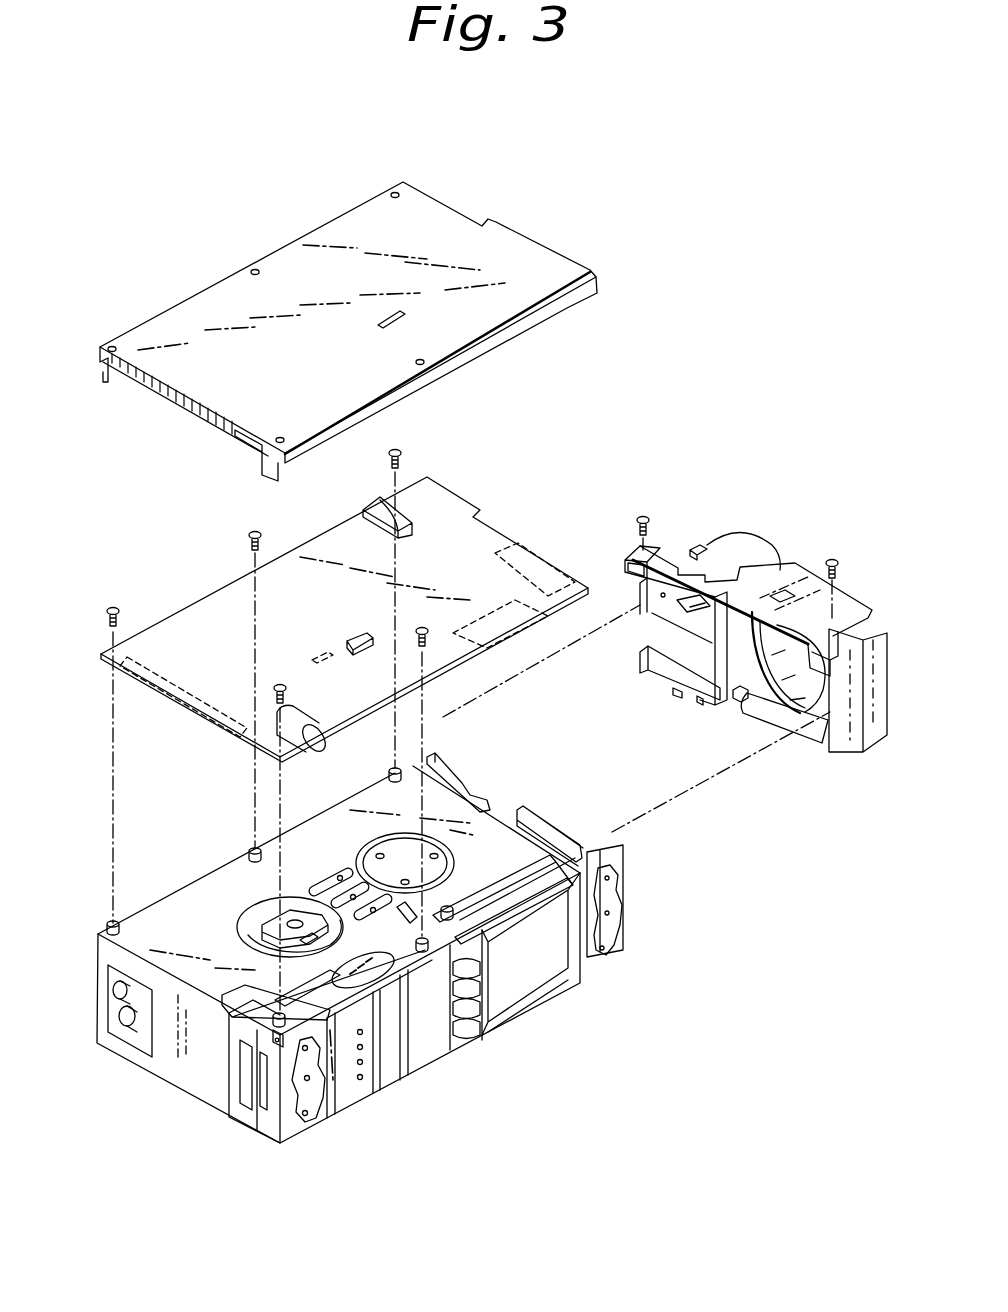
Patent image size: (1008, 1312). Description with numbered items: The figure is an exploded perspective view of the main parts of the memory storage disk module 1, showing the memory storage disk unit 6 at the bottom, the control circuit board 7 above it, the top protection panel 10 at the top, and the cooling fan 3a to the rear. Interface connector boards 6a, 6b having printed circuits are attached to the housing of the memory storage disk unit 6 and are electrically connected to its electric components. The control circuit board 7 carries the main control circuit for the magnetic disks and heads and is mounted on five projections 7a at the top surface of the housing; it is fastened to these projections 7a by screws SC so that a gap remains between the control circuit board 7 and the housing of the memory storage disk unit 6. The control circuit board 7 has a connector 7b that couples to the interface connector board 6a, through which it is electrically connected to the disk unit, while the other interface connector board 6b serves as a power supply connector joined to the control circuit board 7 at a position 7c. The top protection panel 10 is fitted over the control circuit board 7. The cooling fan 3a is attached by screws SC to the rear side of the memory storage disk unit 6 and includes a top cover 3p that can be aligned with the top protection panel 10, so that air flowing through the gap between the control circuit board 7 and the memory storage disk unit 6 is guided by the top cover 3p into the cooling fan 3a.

The memory storage disk module 1 is at (700, 332).
The top protection panel 10 is at (213, 298).
The control circuit board 7 is at (213, 607).
The projections 7a is at (390, 770).
The connector 7b is at (532, 557).
The position 7c is at (473, 503).
The screws SC is at (402, 450).
The cooling fan 3a is at (798, 557).
The top cover 3p is at (780, 605).
The memory storage disk unit 6 is at (405, 1080).
The interface connector board 6a is at (543, 822).
The interface connector board 6b is at (432, 760).